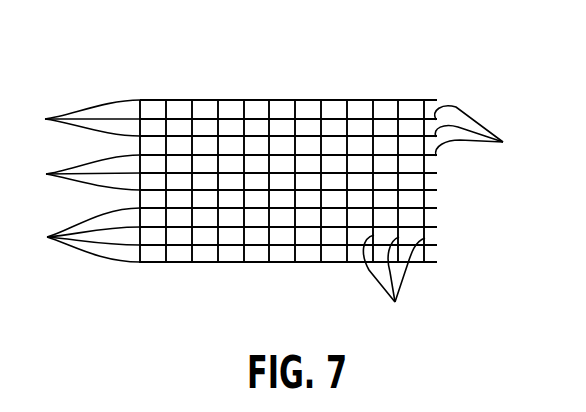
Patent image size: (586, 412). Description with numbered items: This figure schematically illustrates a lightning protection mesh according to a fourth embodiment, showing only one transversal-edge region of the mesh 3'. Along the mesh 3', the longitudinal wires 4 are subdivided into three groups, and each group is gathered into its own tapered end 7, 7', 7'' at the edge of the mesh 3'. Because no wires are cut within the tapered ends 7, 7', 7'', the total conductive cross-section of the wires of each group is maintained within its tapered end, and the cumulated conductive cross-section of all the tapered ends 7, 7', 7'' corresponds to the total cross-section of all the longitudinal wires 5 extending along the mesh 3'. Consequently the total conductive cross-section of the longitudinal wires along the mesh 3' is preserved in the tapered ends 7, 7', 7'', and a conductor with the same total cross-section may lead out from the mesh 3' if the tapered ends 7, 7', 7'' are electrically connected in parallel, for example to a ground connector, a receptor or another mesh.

The mesh 3' is at (288, 140).
The longitudinal wires 4 is at (479, 131).
The longitudinal wires 5 is at (394, 283).
The tapered end 7 is at (92, 99).
The tapered end 7' is at (89, 192).
The tapered end 7'' is at (93, 258).